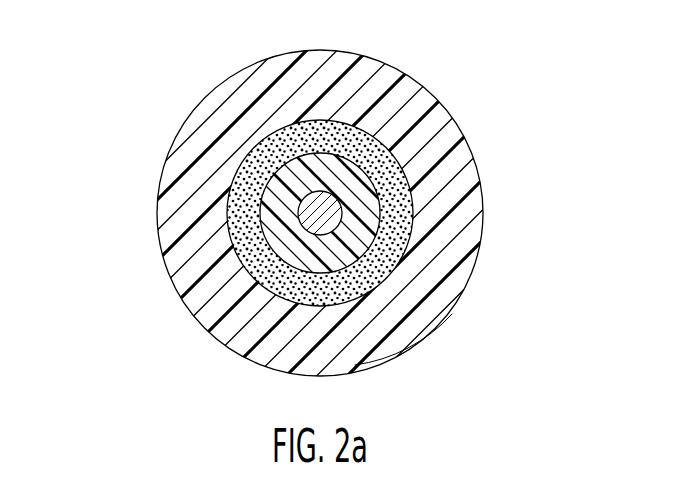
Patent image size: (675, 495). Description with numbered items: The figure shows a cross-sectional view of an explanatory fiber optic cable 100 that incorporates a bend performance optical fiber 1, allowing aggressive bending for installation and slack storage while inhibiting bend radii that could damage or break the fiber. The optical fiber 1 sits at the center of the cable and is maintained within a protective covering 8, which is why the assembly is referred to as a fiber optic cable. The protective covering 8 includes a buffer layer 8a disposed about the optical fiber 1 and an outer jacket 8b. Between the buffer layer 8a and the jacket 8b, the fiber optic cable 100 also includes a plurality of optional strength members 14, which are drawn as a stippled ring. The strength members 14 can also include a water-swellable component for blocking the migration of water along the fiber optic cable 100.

The fiber optic cable 100 is at (100, 148).
The optical fiber 1 is at (321, 214).
The protective covering 8 is at (533, 272).
The buffer layer 8a is at (357, 240).
The jacket 8b is at (453, 230).
The strength members 14 is at (240, 233).